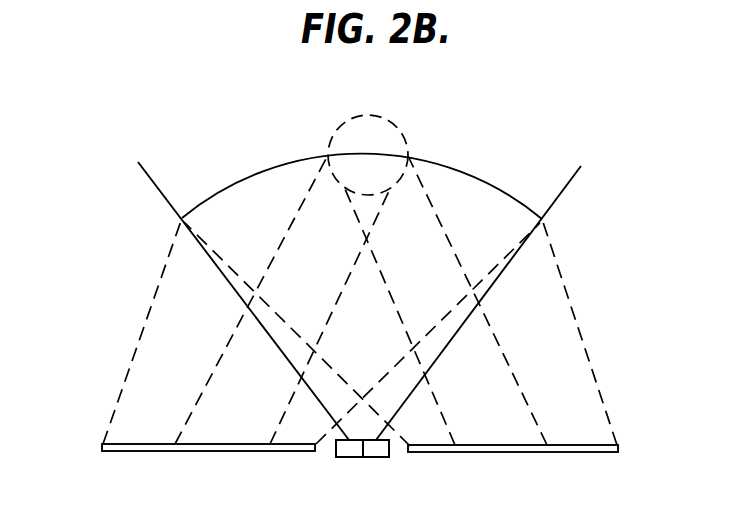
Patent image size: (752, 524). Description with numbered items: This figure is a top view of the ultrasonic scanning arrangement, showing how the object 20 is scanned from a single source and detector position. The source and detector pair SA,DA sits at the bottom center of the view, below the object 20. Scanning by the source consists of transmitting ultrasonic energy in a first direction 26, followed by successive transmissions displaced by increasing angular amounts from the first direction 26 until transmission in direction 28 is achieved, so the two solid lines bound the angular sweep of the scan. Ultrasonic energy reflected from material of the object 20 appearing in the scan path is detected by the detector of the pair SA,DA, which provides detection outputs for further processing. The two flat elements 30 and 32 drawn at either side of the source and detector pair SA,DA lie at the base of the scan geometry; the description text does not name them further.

The object 20 is at (383, 123).
The first direction 26 is at (158, 185).
The final transmission direction 28 is at (569, 184).
The left detector plate 30 is at (183, 453).
The right detector plate 32 is at (513, 474).
The source SA and detector DA SA,DA is at (362, 463).